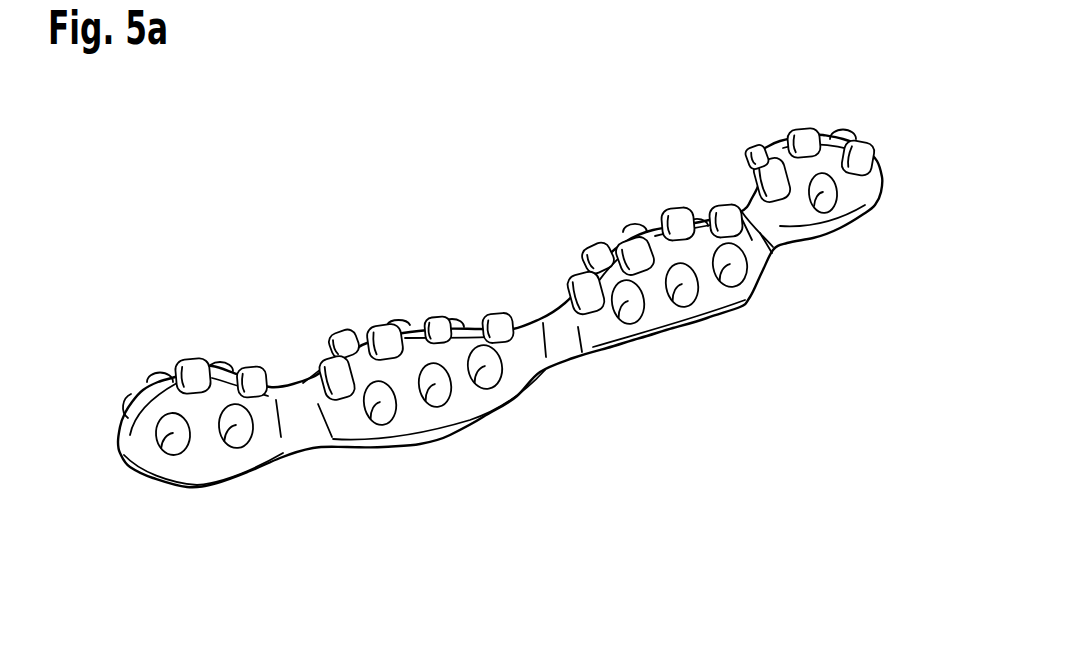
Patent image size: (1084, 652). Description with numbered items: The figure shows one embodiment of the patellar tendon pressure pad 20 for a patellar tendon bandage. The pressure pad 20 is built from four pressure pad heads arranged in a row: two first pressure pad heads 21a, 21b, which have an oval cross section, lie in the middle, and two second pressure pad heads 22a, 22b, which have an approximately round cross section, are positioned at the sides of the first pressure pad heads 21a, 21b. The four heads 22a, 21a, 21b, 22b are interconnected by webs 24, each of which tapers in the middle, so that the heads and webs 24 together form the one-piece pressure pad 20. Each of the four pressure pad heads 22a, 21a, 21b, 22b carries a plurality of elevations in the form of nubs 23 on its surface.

The patellar tendon pressure pad 20 is at (134, 468).
The second pressure pad head 22a is at (203, 449).
The second pressure pad head 22b is at (851, 198).
The first pressure pad head 21a is at (415, 425).
The first pressure pad head 21b is at (683, 317).
The nubs 23 is at (258, 372).
The webs 24 is at (297, 392).